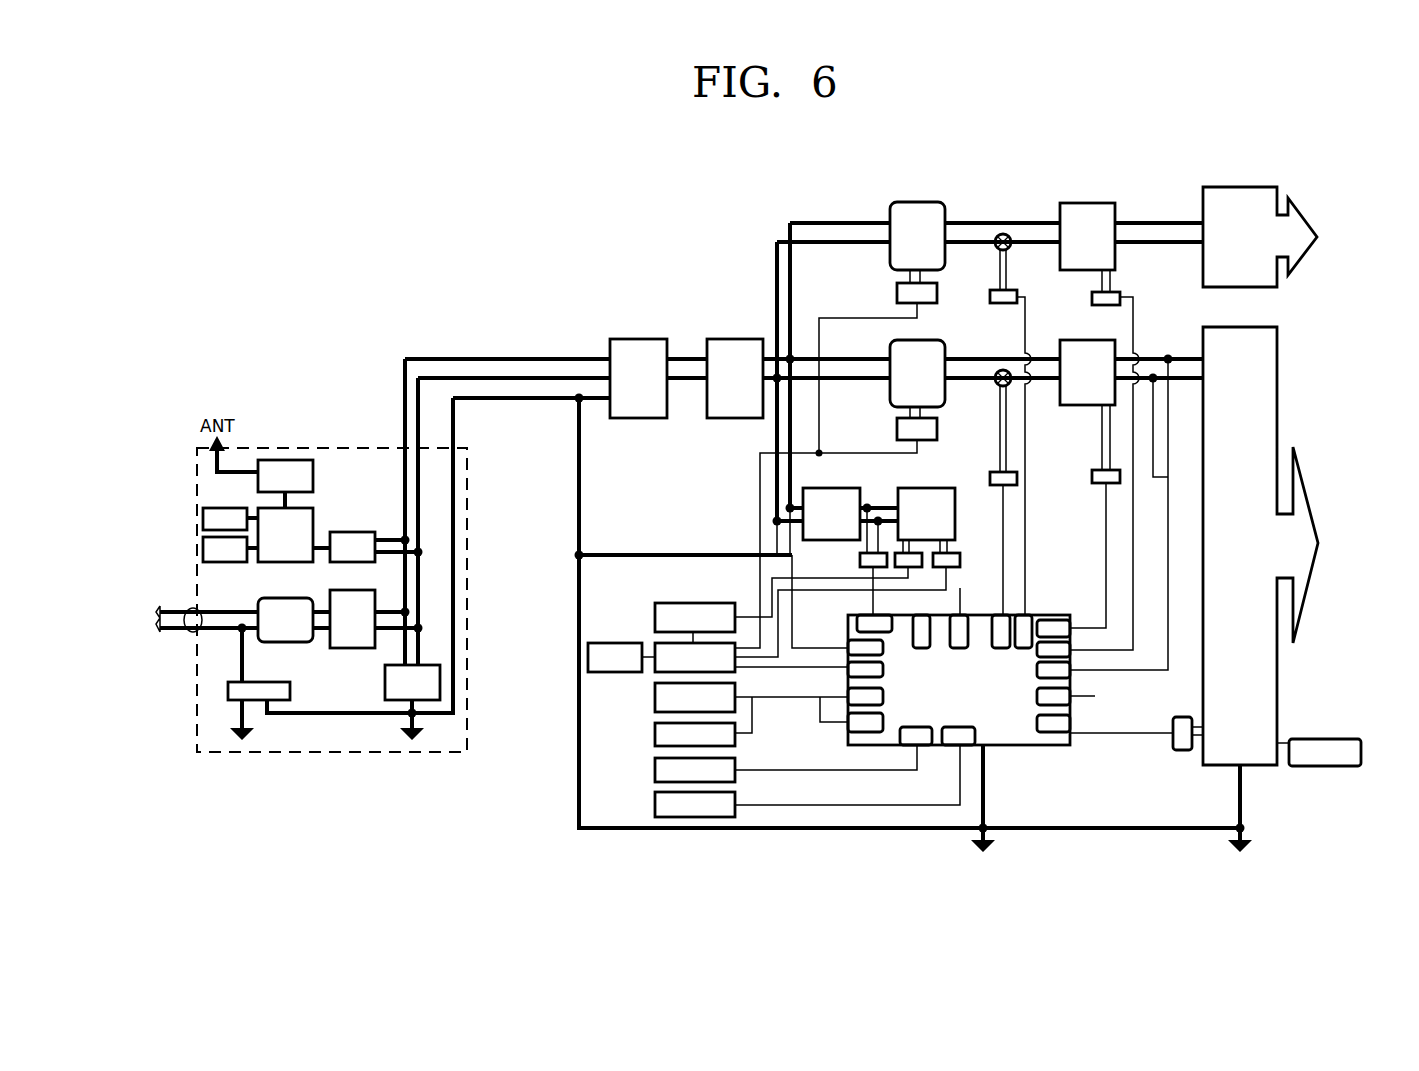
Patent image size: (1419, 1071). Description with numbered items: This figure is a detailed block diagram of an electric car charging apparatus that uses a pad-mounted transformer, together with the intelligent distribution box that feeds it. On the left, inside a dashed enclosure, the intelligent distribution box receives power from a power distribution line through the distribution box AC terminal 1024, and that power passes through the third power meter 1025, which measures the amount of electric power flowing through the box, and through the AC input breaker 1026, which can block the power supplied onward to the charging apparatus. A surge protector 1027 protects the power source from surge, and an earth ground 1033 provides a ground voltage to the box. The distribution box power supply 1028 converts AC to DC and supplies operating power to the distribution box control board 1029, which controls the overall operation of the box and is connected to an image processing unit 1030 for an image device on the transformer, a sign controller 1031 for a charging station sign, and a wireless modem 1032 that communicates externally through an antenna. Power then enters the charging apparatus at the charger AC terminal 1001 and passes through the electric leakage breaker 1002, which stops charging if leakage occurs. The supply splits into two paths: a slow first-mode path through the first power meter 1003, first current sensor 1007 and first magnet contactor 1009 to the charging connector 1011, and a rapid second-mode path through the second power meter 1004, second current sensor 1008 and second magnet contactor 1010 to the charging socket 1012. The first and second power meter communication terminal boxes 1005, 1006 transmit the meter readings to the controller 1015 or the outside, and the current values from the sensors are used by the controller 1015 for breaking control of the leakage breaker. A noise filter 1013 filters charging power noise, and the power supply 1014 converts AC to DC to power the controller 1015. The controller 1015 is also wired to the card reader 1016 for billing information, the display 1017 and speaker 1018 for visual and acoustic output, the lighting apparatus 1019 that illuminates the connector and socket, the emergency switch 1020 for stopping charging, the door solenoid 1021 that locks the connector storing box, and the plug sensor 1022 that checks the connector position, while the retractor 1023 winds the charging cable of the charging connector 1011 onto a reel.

The charger AC terminal 1001 is at (638, 339).
The electric leakage breaker 1002 is at (737, 339).
The first power meter 1003 is at (925, 340).
The second power meter 1004 is at (920, 202).
The first power meter communication terminal box 1005 is at (897, 432).
The second power meter communication terminal box 1006 is at (897, 297).
The first current sensor 1007 is at (998, 390).
The second current sensor 1008 is at (1003, 232).
The first magnet contactor 1009 is at (1095, 340).
The second magnet contactor 1010 is at (1088, 203).
The charging connector 1011 is at (1280, 352).
The charging socket 1012 is at (1240, 187).
The noise filter 1013 is at (810, 488).
The power supply 1014 is at (905, 488).
The controller 1015 is at (1010, 748).
The card reader 1016 is at (668, 603).
The display 1017 is at (655, 648).
The speaker 1018 is at (616, 632).
The lighting apparatus 1019 is at (655, 700).
The emergency switch 1020 is at (655, 737).
The door solenoid 1021 is at (655, 772).
The plug sensor 1022 is at (655, 807).
The retractor 1023 is at (1320, 739).
The distribution box AC terminal 1024 is at (193, 636).
The third power meter 1025 is at (272, 598).
The AC input breaker 1026 is at (356, 648).
The surge protector 1027 is at (385, 680).
The distribution box power supply 1028 is at (355, 532).
The distribution box control board 1029 is at (268, 563).
The image processing unit 1030 is at (215, 563).
The sign controller 1031 is at (212, 508).
The wireless modem 1032 is at (313, 476).
The earth ground 1033 is at (228, 690).